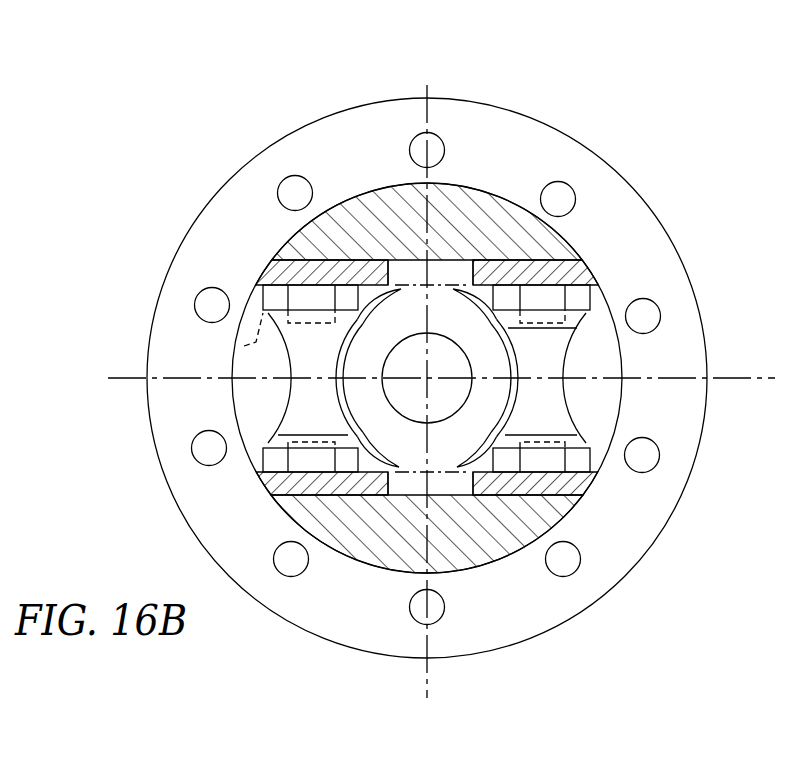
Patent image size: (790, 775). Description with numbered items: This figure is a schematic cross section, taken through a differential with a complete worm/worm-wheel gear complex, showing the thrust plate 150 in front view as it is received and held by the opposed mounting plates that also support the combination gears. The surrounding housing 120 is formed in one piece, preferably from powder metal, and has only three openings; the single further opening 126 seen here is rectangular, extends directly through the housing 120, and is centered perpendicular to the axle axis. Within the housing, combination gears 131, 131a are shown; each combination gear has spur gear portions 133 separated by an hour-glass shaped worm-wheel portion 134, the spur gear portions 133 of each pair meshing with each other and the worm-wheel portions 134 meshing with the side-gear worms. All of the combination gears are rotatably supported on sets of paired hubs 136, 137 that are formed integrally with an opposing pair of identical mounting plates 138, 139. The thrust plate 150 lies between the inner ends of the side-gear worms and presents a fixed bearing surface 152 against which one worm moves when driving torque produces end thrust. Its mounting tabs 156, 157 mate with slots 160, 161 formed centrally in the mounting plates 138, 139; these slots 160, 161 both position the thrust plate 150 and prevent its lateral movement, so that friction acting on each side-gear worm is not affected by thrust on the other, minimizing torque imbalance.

The housing 120 is at (530, 137).
The single further opening 126 is at (580, 262).
The combination gear 131 is at (580, 445).
The combination gear 131a is at (265, 453).
The spur gear portion 133 is at (368, 318).
The worm-wheel portion 134 is at (297, 425).
The hub 136 is at (244, 346).
The hub 137 is at (273, 503).
The mounting plate 138 is at (258, 292).
The mounting plate 139 is at (252, 458).
The thrust plate 150 is at (386, 409).
The bearing surface 152 is at (485, 413).
The mounting tab 156 is at (417, 268).
The mounting tab 157 is at (415, 487).
The slot 160 is at (395, 262).
The slot 161 is at (453, 490).